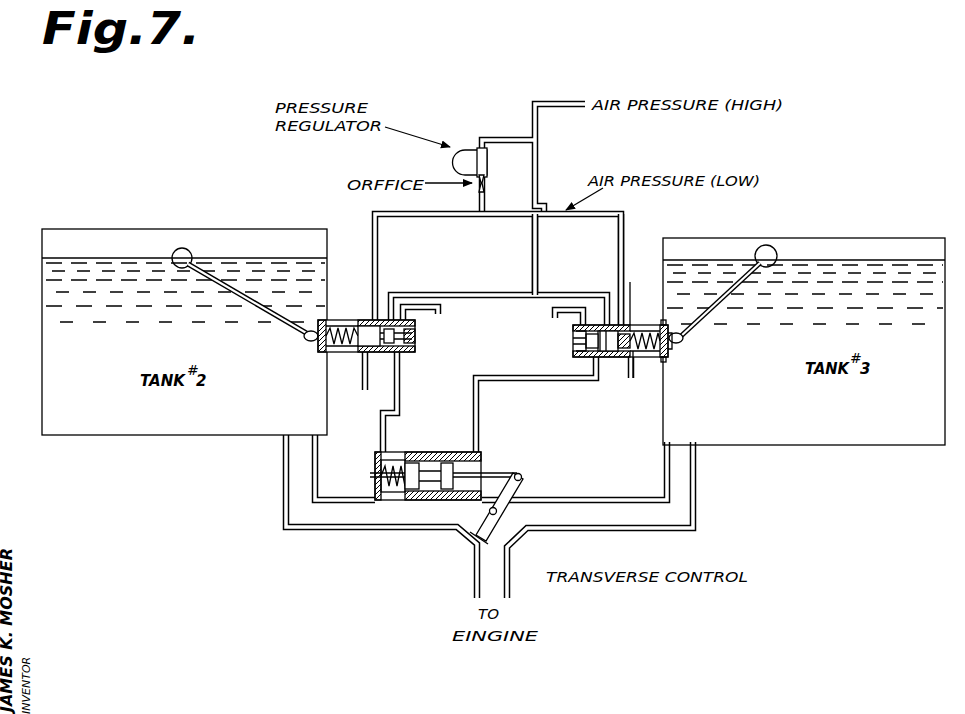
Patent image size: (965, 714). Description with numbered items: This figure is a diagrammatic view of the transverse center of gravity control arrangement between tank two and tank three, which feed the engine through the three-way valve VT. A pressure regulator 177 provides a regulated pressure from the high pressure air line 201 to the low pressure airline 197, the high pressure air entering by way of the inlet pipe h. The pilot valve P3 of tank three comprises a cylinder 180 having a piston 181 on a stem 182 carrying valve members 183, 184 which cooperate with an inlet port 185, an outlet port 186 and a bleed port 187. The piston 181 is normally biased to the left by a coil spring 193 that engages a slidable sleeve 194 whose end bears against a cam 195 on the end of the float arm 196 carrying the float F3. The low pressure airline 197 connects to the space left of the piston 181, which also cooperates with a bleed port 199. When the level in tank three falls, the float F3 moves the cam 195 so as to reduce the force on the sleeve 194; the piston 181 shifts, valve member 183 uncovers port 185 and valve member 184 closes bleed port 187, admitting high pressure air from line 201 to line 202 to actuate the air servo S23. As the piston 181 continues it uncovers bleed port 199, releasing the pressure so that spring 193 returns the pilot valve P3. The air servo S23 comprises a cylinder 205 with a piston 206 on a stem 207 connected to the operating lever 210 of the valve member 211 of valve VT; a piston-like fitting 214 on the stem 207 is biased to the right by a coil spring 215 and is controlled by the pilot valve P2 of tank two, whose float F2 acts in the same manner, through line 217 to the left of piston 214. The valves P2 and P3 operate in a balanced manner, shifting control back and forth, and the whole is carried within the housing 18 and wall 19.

The housing casing 18 is at (345, 530).
The transverse control housing wall 19 is at (592, 532).
The pressure regulator 177 is at (470, 149).
The cylinder 180 is at (621, 358).
The piston 181 is at (640, 291).
The stem 182 is at (606, 356).
The valve member 183 is at (603, 326).
The valve member 184 is at (590, 342).
The inlet port 185 is at (600, 340).
The outlet port 186 is at (585, 352).
The bleed port 187 is at (578, 333).
The coil spring 193 is at (665, 360).
The slidable sleeve 194 is at (676, 347).
The cam 195 is at (684, 341).
The float arm 196 is at (725, 282).
The low pressure airline 197 is at (628, 228).
The bleed port 199 is at (637, 360).
The high pressure air line 201 is at (532, 250).
The line 202 is at (500, 378).
The cylinder 205 is at (430, 500).
The piston 206 is at (455, 470).
The stem 207 is at (494, 475).
The operating lever 210 is at (505, 495).
The valve member 211 is at (478, 541).
The fitting 214 is at (405, 452).
The coil spring 215 is at (380, 481).
The line 217 is at (400, 385).
The float F2 is at (185, 246).
The float F3 is at (738, 286).
The pilot valve P2 is at (343, 320).
The pilot valve P3 is at (626, 340).
The air servo S23 is at (439, 480).
The three-way valve VT is at (540, 484).
The air pressure inlet pipe h is at (537, 276).